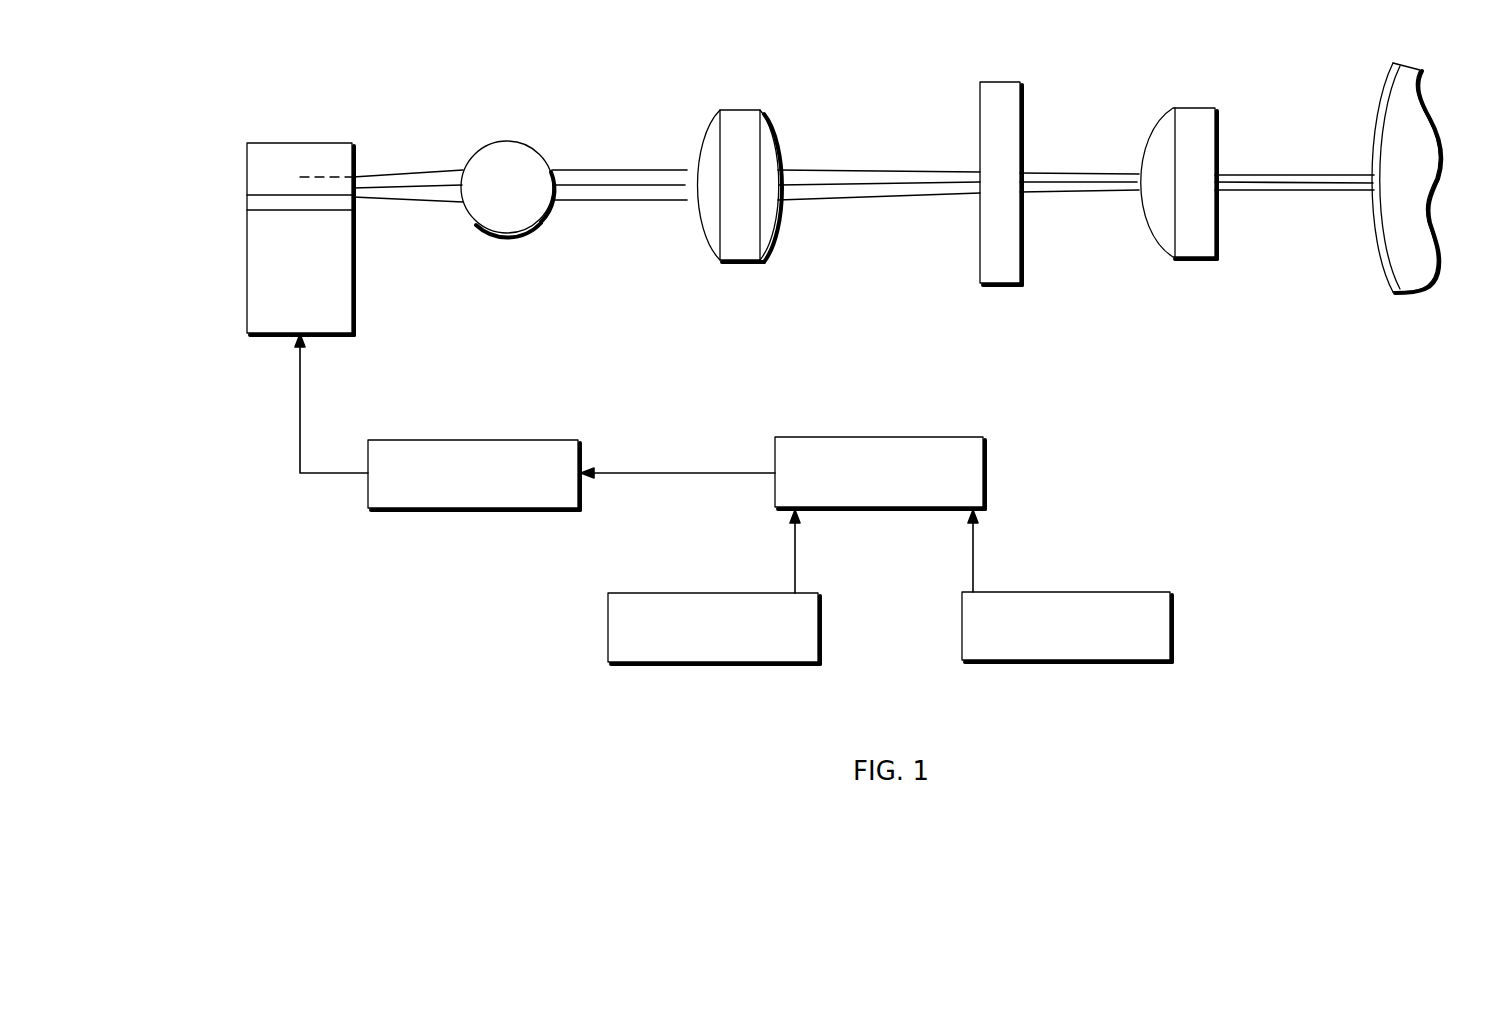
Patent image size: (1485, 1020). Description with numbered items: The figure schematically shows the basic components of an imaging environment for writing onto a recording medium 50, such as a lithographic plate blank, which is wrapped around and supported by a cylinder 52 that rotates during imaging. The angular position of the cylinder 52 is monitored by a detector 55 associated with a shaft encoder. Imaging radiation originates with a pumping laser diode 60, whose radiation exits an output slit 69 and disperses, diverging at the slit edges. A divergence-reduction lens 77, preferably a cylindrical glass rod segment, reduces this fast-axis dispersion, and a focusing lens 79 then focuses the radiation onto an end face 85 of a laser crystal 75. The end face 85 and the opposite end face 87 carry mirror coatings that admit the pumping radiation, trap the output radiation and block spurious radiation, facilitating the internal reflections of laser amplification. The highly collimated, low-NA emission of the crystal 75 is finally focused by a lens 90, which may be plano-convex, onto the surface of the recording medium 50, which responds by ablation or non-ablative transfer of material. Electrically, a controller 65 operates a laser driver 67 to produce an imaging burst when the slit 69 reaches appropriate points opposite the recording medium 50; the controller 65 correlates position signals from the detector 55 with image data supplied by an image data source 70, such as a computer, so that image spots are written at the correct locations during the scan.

The recording medium 50 is at (1381, 243).
The cylinder 52 is at (1410, 170).
The detector 55 is at (1098, 592).
The pumping laser diode 60 is at (250, 292).
The controller 65 is at (955, 437).
The laser driver 67 is at (562, 440).
The output slit 69 is at (305, 187).
The image data source 70 is at (684, 593).
The laser crystal 75 is at (1010, 82).
The divergence-reduction lens 77 is at (509, 141).
The focusing lens 79 is at (738, 110).
The end face 85 is at (973, 261).
The end face 87 is at (1046, 266).
The lens 90 is at (1205, 108).